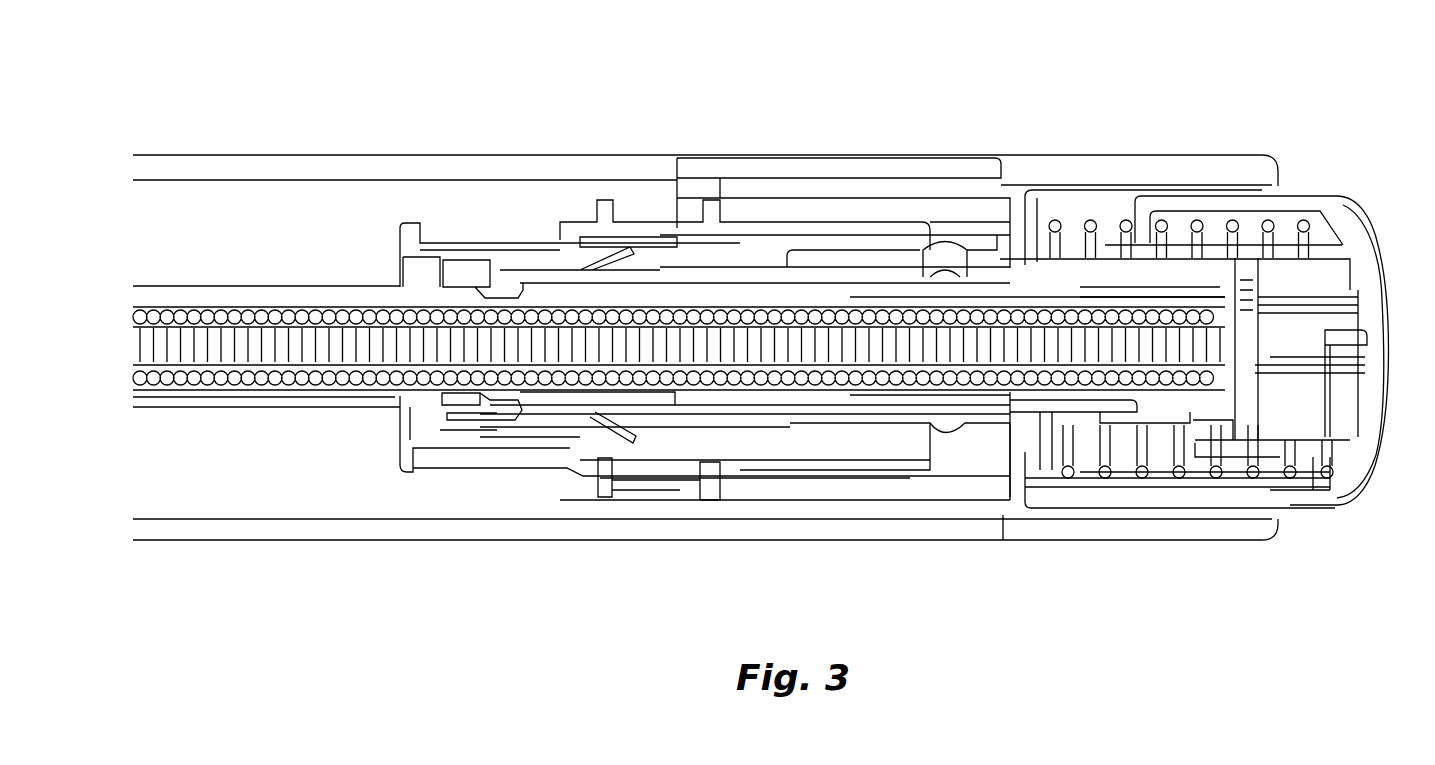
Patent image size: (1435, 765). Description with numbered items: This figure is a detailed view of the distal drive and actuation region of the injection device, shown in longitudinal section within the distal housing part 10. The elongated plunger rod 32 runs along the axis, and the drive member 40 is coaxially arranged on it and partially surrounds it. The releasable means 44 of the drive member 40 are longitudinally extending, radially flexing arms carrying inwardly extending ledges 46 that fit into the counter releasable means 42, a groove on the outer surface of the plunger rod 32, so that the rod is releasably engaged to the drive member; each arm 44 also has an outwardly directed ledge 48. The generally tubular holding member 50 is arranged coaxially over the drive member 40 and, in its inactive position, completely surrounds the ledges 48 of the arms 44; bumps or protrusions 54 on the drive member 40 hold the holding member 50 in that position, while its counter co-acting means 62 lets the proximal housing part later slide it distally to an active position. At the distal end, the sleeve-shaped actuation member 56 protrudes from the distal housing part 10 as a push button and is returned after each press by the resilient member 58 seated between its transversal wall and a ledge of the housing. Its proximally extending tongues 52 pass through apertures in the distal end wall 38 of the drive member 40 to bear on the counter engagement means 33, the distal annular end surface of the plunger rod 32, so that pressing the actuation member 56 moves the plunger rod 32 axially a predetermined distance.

The distal housing part 10 is at (1020, 170).
The plunger rod 32 is at (203, 290).
The counter engagement means 33 is at (850, 297).
The distal end wall 38 is at (1223, 312).
The drive member 40 is at (665, 278).
The counter releasable means 42 is at (486, 298).
The releasable means 44 is at (542, 278).
The inwardly extending ledges 46 is at (508, 408).
The outwardly directed ledge 48 is at (467, 423).
The holding member 50 is at (787, 232).
The engagement means 52 is at (887, 297).
The protrusions 54 is at (948, 430).
The actuation member 56 is at (1350, 248).
The resilient member 58 is at (1143, 453).
The counter co-acting means 62 is at (607, 480).